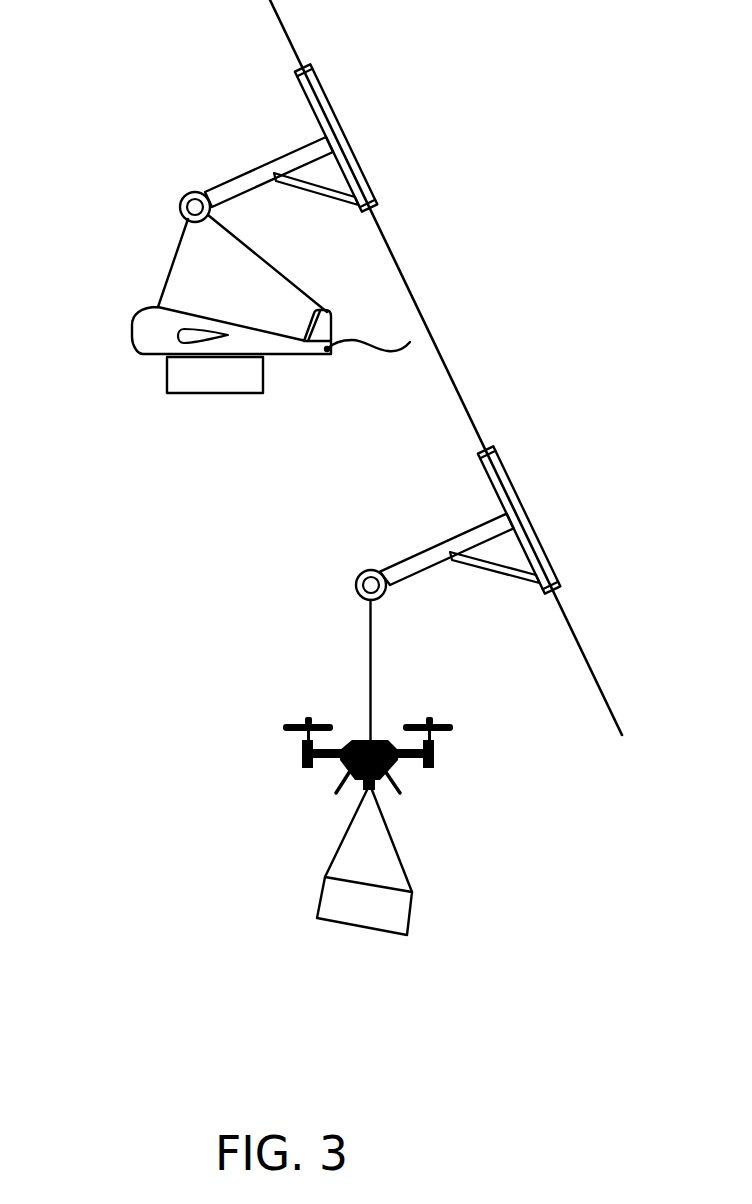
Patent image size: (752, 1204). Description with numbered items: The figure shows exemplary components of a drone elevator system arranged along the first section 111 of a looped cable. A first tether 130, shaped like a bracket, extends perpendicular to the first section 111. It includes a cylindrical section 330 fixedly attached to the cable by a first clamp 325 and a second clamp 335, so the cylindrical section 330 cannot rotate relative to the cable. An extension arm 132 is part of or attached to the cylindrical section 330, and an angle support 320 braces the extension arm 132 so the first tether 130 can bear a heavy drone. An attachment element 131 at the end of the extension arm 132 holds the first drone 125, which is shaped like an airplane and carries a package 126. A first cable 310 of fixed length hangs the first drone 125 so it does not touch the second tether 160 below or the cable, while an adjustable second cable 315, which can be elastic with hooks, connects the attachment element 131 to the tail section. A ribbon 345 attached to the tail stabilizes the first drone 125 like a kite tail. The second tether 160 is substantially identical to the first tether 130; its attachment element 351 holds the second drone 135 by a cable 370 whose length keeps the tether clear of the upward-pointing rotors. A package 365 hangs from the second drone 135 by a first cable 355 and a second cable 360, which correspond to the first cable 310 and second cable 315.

The first section of the looped cable 111 is at (413, 263).
The first drone 125 is at (173, 338).
The package 126 is at (197, 386).
The first tether 130 is at (206, 171).
The attachment element 131 is at (175, 207).
The extension arm 132 is at (295, 147).
The second drone 135 is at (245, 752).
The second tether 160 is at (411, 523).
The first cable 310 is at (163, 283).
The second cable 315 is at (248, 252).
The angle support 320 is at (327, 198).
The first clamp 325 is at (318, 68).
The cylindrical section 330 is at (358, 118).
The second clamp 335 is at (378, 200).
The ribbon 345 is at (391, 354).
The attachment element 351 is at (358, 582).
The first cable 355 is at (330, 860).
The second cable 360 is at (403, 863).
The package 365 is at (342, 918).
The cable 370 is at (372, 688).